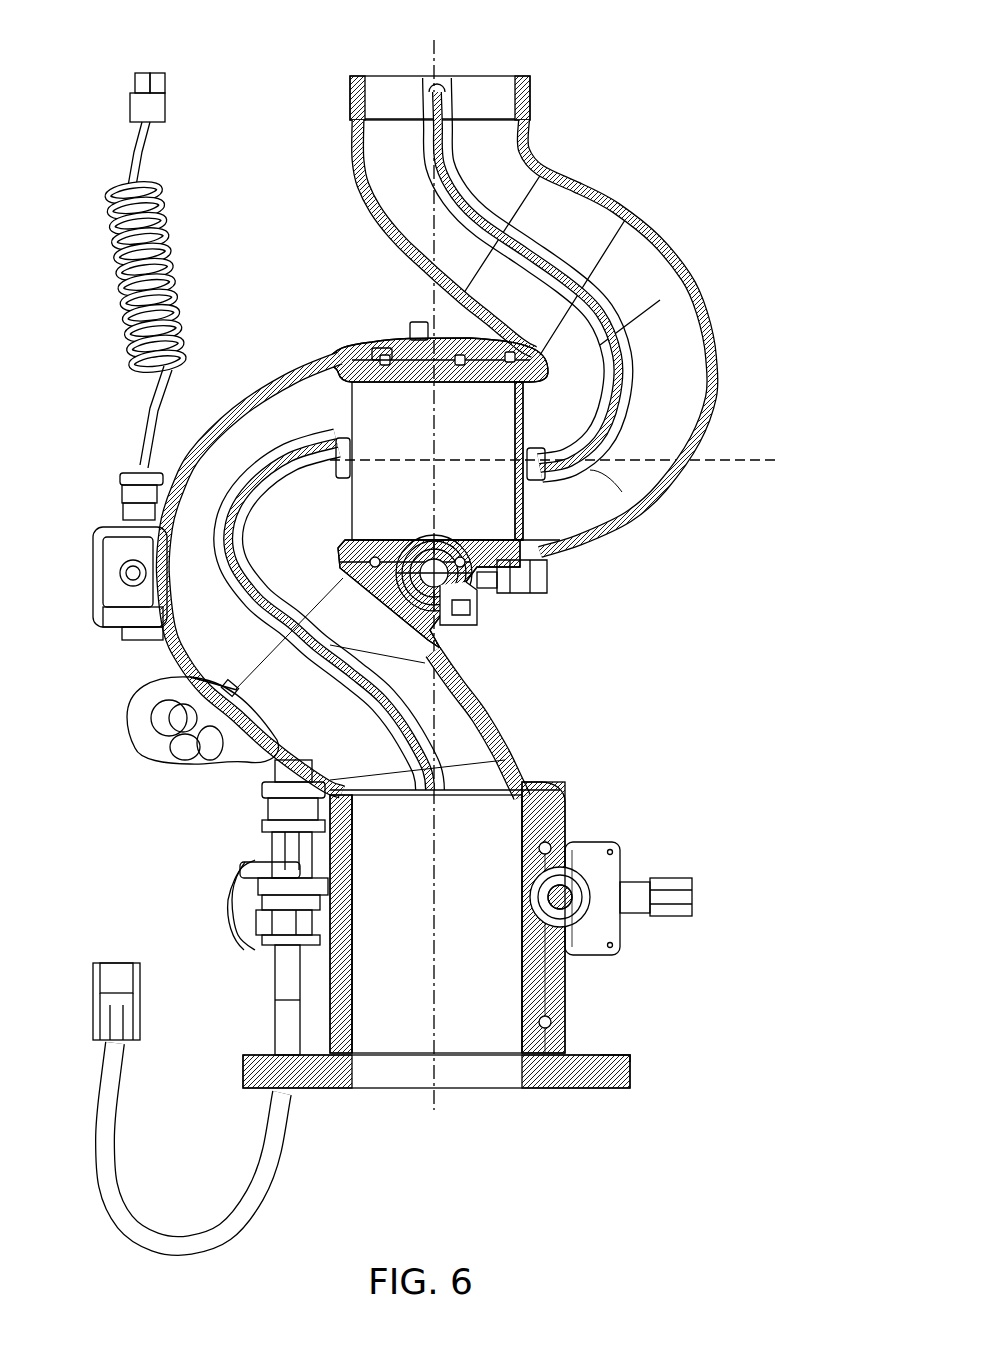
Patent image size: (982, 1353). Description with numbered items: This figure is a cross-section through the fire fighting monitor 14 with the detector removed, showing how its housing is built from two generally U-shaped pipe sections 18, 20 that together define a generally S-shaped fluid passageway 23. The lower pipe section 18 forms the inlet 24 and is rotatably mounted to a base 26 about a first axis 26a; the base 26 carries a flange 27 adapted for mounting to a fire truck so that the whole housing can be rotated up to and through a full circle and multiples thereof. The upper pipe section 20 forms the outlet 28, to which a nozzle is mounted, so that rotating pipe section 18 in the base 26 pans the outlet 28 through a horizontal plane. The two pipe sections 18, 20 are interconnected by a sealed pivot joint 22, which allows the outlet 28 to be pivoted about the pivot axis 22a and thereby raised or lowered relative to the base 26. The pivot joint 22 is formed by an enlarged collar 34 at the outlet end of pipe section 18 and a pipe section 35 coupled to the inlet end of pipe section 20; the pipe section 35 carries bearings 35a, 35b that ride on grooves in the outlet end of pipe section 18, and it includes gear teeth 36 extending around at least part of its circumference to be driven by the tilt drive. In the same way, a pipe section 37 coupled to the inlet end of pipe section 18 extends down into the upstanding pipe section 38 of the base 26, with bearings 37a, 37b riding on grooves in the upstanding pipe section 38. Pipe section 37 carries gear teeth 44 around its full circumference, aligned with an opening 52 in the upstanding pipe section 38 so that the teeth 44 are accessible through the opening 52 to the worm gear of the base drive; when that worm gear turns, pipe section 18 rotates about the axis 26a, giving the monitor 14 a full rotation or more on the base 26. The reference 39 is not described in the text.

The monitor 14 is at (771, 172).
The pipe section 18 is at (517, 726).
The pipe section 20 is at (722, 360).
The pivot joint 22 is at (586, 583).
The pivot axis 22a is at (760, 468).
The fluid passageway 23 is at (605, 492).
The inlet 24 is at (374, 796).
The base 26 is at (633, 1079).
The first axis 26a is at (430, 1102).
The flange 27 is at (618, 1055).
The outlet 28 is at (490, 88).
The enlarged collar 34 is at (338, 353).
The pipe section 35 is at (512, 594).
The bearing 35a is at (382, 346).
The bearing 35b is at (472, 341).
The gear teeth 36 is at (477, 612).
The pipe section 37 is at (568, 980).
The bearing 37a is at (566, 846).
The bearing 37b is at (568, 1032).
The upstanding pipe section 38 is at (252, 867).
The lower housing assembly 39 is at (467, 925).
The gear teeth 44 is at (540, 909).
The opening 52 is at (600, 886).